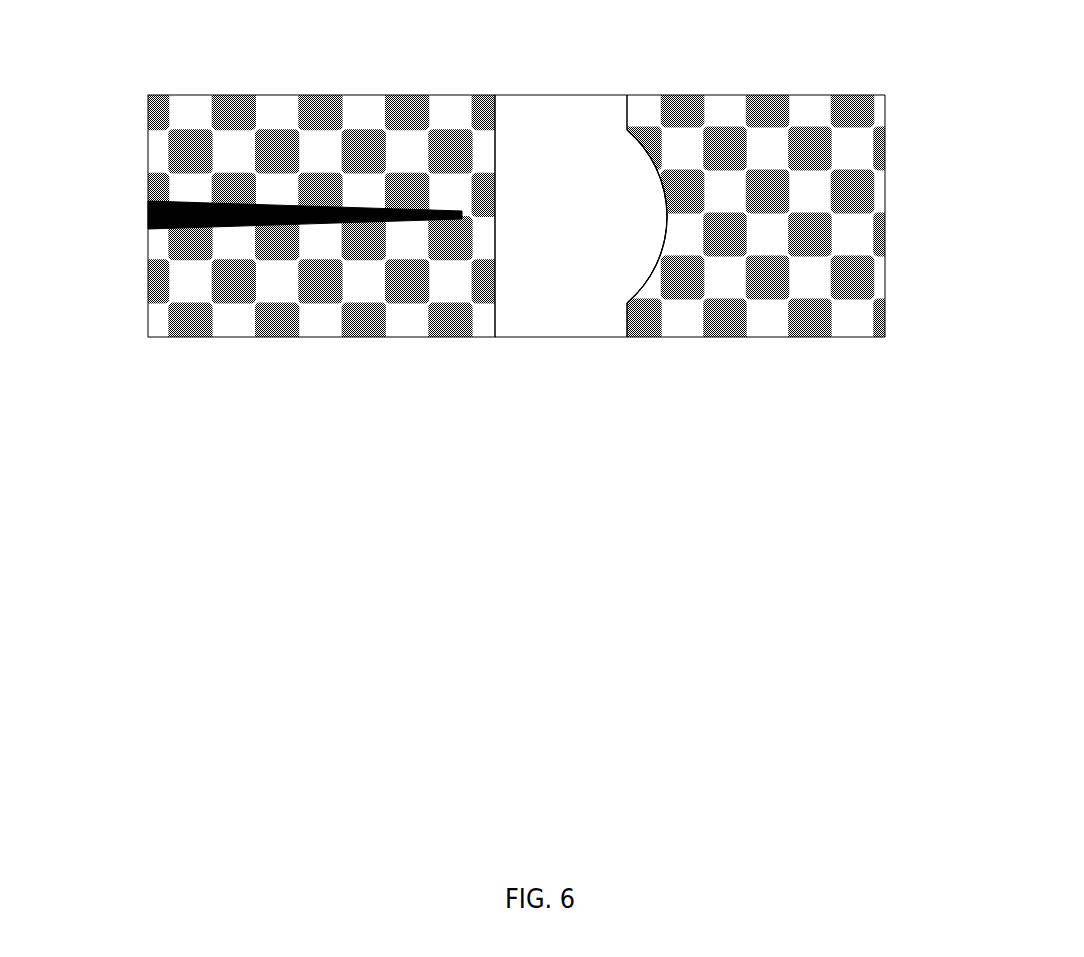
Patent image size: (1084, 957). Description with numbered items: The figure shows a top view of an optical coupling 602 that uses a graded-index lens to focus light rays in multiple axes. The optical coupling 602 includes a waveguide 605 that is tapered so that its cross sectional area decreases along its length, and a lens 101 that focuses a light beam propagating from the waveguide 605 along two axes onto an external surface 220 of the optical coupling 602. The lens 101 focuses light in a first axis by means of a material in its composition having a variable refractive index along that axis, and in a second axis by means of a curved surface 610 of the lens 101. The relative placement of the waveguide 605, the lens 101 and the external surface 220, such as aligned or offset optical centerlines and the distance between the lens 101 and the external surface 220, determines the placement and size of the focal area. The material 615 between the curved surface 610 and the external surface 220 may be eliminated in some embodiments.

The optical coupling 602 is at (414, 95).
The waveguide 605 is at (148, 207).
The lens 101 is at (578, 172).
The curved surface 610 is at (665, 234).
The material 615 is at (775, 228).
The external surface 220 is at (891, 110).